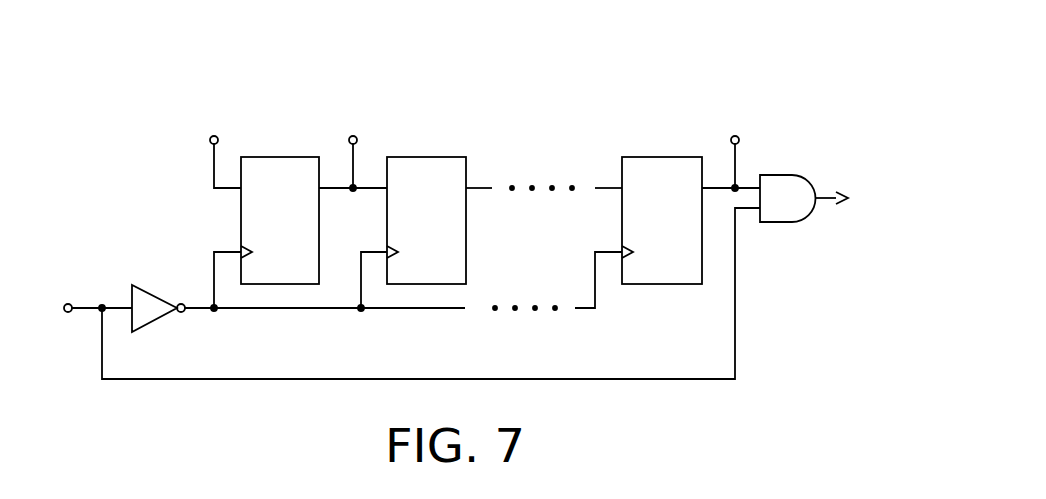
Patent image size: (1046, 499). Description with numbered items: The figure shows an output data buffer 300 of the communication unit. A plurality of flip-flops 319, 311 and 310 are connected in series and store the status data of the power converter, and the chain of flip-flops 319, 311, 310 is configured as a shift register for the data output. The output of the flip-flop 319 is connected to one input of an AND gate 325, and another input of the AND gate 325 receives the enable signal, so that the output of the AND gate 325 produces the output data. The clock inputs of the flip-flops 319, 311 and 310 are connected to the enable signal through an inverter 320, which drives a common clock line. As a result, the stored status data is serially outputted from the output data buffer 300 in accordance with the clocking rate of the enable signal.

The output data buffer 300 is at (824, 42).
The flip-flop 310 is at (284, 157).
The flip-flop 311 is at (430, 157).
The flip-flop 319 is at (664, 157).
The inverter 320 is at (153, 320).
The AND gate 325 is at (779, 175).